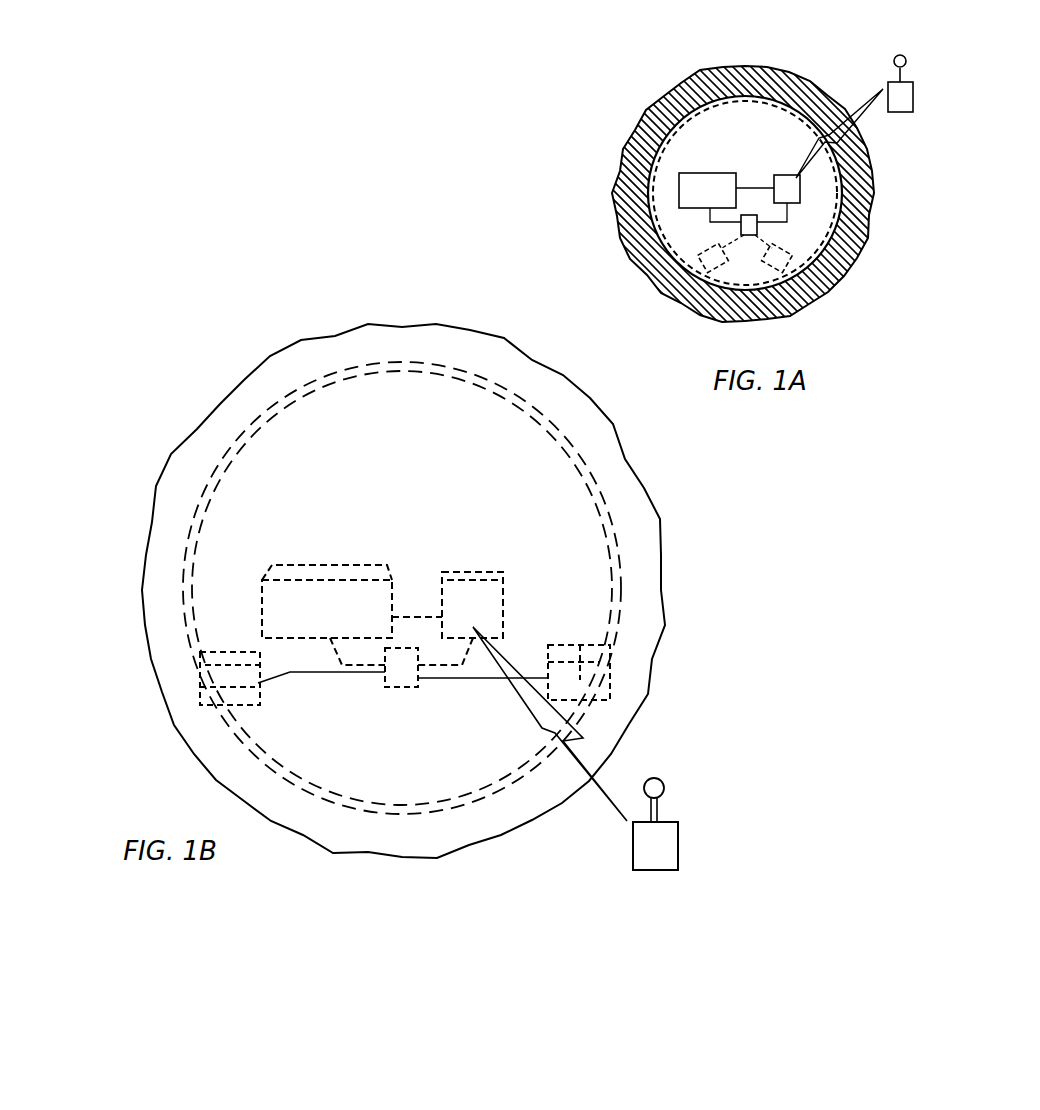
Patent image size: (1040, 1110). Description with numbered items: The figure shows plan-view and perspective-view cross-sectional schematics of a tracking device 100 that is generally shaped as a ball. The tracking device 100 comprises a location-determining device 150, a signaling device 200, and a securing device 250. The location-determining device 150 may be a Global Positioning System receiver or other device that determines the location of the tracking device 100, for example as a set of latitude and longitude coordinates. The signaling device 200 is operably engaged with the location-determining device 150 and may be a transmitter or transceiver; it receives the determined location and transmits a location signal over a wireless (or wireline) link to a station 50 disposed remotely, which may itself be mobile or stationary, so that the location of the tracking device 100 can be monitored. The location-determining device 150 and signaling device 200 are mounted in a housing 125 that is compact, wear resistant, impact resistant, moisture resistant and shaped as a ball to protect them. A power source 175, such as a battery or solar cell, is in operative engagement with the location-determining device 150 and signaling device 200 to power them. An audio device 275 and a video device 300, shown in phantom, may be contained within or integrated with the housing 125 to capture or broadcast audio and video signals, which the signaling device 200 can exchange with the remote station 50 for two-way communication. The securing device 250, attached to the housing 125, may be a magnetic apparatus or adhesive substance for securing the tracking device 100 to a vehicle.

In FIG. 1A, the station 50 is at (903, 100).
In FIG. 1B, the station 50 is at (663, 852).
In FIG. 1A, the tracking device 100 is at (494, 146).
In FIG. 1B, the tracking device 100 is at (202, 378).
In FIG. 1A, the housing 125 is at (840, 263).
In FIG. 1B, the housing 125 is at (620, 552).
In FIG. 1A, the location-determining device 150 is at (695, 183).
In FIG. 1B, the location-determining device 150 is at (311, 617).
In FIG. 1A, the power source 175 is at (741, 224).
In FIG. 1B, the power source 175 is at (403, 672).
In FIG. 1A, the signaling device 200 is at (790, 187).
In FIG. 1B, the signaling device 200 is at (457, 617).
In FIG. 1A, the securing device 250 is at (702, 313).
In FIG. 1B, the securing device 250 is at (183, 718).
In FIG. 1A, the audio device 275 is at (703, 270).
In FIG. 1B, the audio device 275 is at (237, 677).
In FIG. 1A, the video device 300 is at (803, 312).
In FIG. 1B, the video device 300 is at (590, 672).